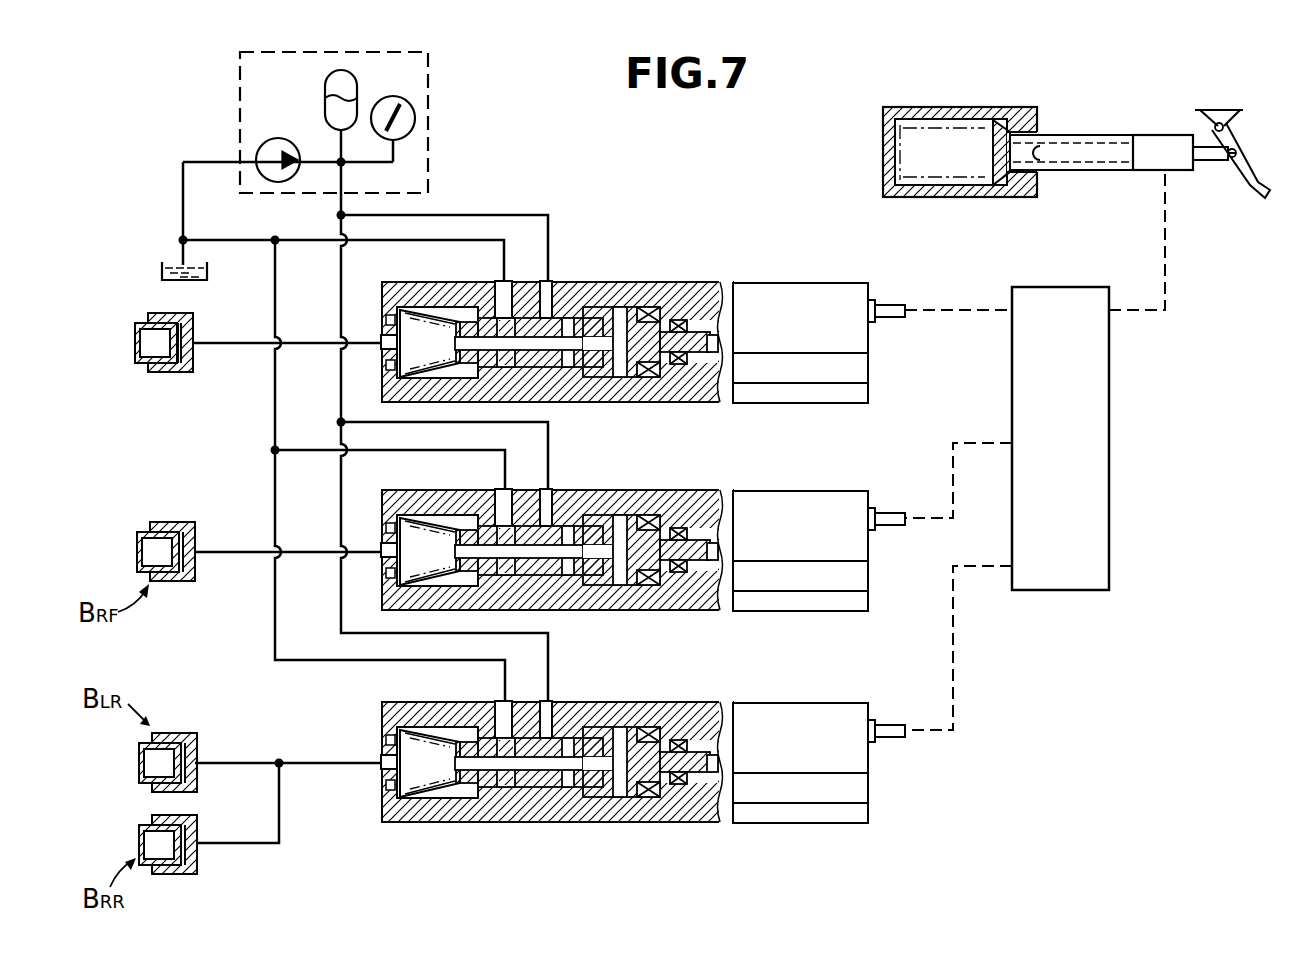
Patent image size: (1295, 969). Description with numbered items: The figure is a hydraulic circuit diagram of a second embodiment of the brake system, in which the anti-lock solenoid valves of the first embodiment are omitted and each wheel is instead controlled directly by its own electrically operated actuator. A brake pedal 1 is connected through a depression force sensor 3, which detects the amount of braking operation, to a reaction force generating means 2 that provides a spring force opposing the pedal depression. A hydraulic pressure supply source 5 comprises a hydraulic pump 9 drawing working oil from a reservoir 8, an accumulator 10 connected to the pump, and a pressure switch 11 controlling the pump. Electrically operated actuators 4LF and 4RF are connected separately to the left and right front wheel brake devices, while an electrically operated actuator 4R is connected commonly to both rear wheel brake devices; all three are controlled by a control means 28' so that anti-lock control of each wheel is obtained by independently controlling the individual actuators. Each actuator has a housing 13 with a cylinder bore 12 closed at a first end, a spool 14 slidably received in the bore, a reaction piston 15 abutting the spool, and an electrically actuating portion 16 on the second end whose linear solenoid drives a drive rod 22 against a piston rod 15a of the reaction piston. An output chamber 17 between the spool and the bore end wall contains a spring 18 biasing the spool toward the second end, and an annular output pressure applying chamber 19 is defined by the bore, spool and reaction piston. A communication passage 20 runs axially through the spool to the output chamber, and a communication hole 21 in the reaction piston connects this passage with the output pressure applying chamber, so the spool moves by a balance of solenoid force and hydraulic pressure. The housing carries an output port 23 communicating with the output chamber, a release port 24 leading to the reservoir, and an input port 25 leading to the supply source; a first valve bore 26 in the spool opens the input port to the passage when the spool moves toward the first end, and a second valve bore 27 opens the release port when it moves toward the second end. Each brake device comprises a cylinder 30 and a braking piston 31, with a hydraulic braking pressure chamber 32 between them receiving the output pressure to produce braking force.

The brake pedal 1 is at (1264, 189).
The reaction force generating means 2 is at (940, 110).
The depression force sensor 3 is at (1143, 135).
The electrically operated actuator 4LF is at (625, 328).
The electrically operated actuator 4RF is at (623, 492).
The electrically operated actuator 4R is at (642, 704).
The hydraulic pressure supply source 5 is at (428, 118).
The reservoir 8 is at (207, 271).
The hydraulic pump 9 is at (290, 152).
The accumulator 10 is at (328, 88).
The pressure switch 11 is at (391, 98).
The cylinder bore 12 is at (465, 320).
The housing 13 is at (710, 286).
The spool 14 is at (583, 367).
The reaction piston 15 is at (640, 377).
The piston rod 15a is at (696, 356).
The electrically actuating portion 16 is at (812, 334).
The output chamber 17 is at (386, 368).
The spring 18 is at (400, 286).
The output pressure applying chamber 19 is at (594, 320).
The communication passage 20 is at (430, 343).
The communication hole 21 is at (640, 302).
The drive rod 22 is at (716, 341).
The output port 23 is at (382, 330).
The release port 24 is at (500, 295).
The input port 25 is at (542, 290).
The first valve bore 26 is at (568, 318).
The second valve bore 27 is at (506, 332).
The control means 28' is at (1035, 450).
The cylinder 30 is at (192, 324).
The braking piston 31 is at (138, 324).
The hydraulic braking pressure chamber 32 is at (193, 364).